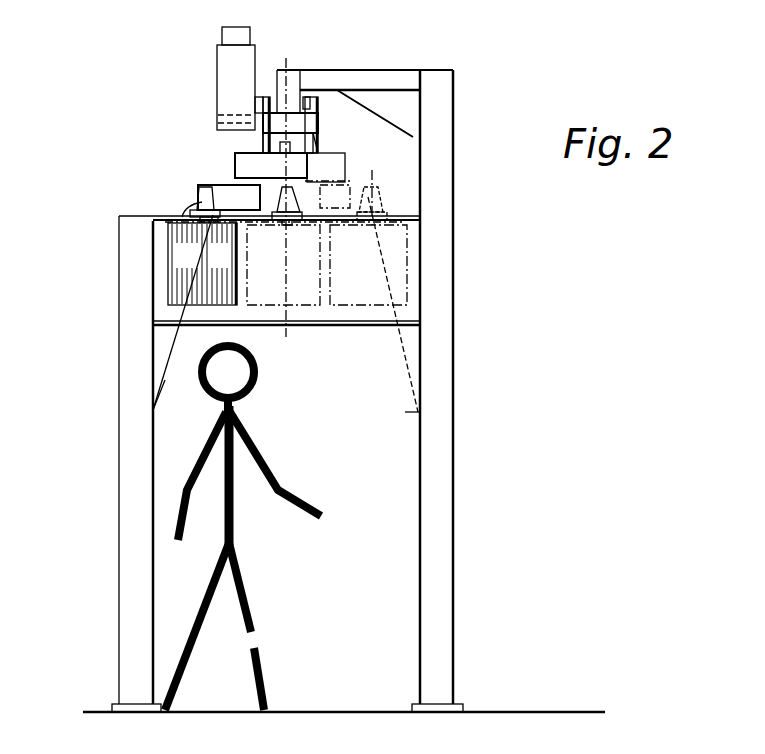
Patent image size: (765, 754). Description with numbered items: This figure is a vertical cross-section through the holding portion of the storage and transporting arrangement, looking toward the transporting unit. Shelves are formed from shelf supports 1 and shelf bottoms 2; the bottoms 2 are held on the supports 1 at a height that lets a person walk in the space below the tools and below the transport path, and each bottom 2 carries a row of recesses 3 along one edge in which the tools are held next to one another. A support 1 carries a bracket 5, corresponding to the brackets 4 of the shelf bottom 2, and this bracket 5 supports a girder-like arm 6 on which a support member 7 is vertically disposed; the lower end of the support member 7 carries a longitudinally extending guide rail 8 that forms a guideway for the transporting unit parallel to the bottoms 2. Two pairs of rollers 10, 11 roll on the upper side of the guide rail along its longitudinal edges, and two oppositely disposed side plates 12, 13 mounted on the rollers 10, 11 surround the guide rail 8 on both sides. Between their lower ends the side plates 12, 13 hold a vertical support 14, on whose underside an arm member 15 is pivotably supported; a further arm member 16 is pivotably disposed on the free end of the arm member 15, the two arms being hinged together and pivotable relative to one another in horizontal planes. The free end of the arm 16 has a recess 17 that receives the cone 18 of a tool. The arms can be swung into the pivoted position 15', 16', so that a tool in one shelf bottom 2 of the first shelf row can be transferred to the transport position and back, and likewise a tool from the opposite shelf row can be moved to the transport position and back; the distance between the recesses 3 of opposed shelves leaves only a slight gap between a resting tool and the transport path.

The shelf support 1 is at (133, 402).
The shelf bottom 2 is at (163, 222).
The recess 3 is at (212, 222).
The bracket 4 is at (415, 355).
The bracket 5 is at (397, 115).
The girder-like arm 6 is at (372, 78).
The support member 7 is at (289, 74).
The guide rail 8 is at (302, 123).
The roller 10 is at (265, 98).
The roller 11 is at (308, 93).
The side plate 12 is at (257, 138).
The side plate 13 is at (317, 143).
The vertical support 14 is at (273, 143).
The arm member 15 is at (212, 181).
The pivoted position of arm member 15 15' is at (355, 164).
The further arm member 16 is at (283, 265).
The pivoted position of arm member 16 16' is at (363, 245).
The recess 17 is at (214, 197).
The cone 18 is at (202, 264).